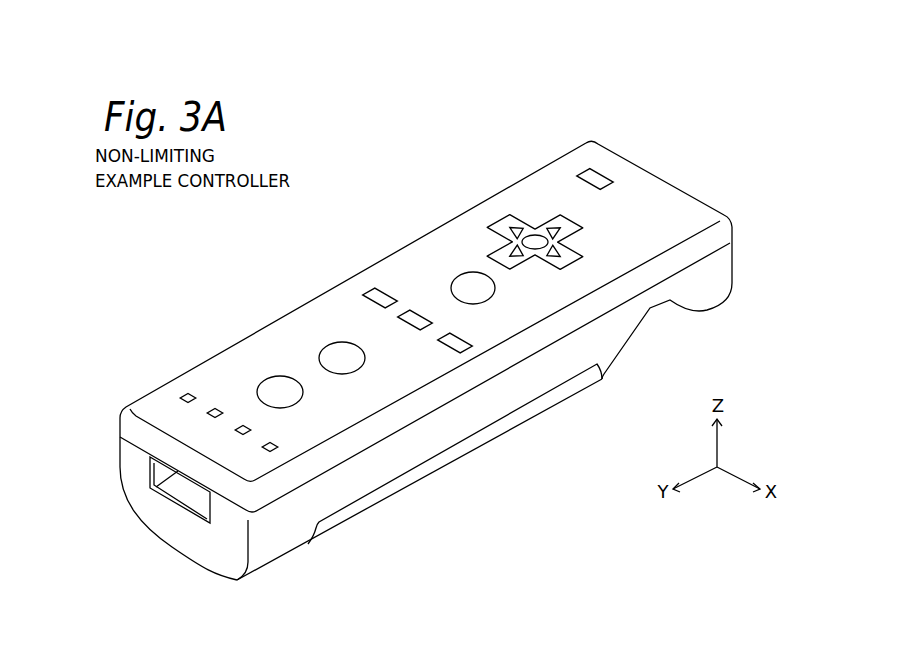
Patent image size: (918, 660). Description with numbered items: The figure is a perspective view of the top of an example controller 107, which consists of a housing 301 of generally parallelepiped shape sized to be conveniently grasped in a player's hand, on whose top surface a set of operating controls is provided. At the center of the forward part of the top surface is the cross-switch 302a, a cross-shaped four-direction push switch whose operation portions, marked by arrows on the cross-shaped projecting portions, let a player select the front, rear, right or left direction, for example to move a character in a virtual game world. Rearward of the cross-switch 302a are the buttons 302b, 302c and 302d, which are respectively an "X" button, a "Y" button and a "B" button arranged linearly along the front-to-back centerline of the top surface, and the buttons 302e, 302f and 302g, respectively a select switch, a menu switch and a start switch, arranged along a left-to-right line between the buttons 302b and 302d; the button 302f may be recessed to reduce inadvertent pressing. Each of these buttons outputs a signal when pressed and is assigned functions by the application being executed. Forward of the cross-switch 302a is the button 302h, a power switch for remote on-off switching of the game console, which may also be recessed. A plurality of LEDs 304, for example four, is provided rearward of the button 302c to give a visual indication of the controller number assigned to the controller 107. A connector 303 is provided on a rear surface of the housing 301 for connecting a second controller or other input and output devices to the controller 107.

The controller 107 is at (532, 151).
The housing 301 is at (155, 397).
The cross-switch 302a is at (542, 227).
The button 302b is at (342, 354).
The button 302c is at (280, 388).
The button 302d is at (470, 283).
The button 302e is at (382, 296).
The button 302f is at (415, 319).
The button 302g is at (460, 348).
The button 302h is at (595, 176).
The connector 303 is at (192, 488).
The LEDs 304 is at (275, 450).